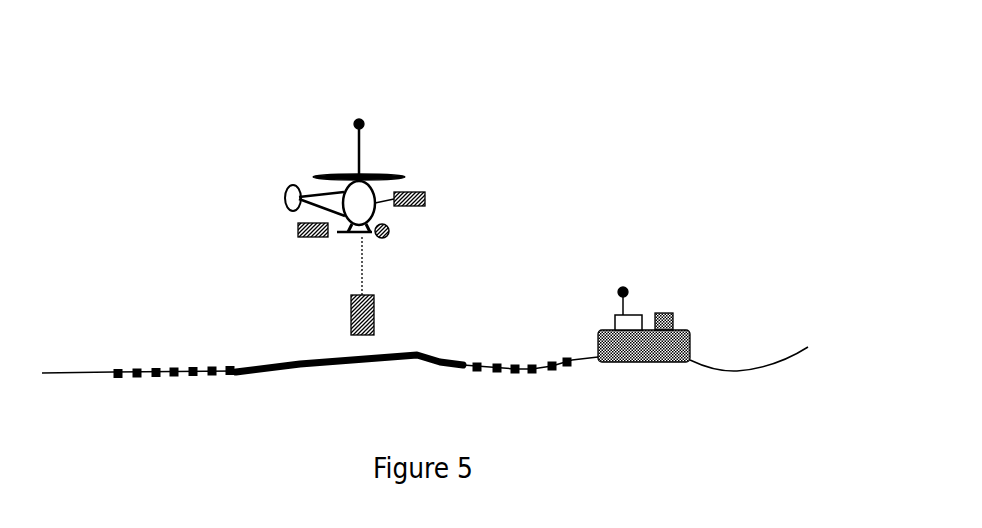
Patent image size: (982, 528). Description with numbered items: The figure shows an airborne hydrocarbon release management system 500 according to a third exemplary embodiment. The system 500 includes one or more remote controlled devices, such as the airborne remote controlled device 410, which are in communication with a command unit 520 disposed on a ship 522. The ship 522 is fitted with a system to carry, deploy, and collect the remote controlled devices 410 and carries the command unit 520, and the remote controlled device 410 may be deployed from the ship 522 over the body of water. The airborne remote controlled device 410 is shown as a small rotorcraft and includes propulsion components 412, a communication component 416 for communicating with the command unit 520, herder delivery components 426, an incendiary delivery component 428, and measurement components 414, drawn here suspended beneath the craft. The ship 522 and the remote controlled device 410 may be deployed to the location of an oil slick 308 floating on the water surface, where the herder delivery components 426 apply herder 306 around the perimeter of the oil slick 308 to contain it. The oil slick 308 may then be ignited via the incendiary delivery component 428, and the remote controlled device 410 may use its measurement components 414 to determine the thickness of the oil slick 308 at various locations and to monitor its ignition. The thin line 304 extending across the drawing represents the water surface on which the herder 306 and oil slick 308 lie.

The airborne hydrocarbon release management system 500 is at (556, 90).
The airborne remote controlled device 410 is at (328, 108).
The propulsion components 412 is at (327, 172).
The communication component 416 is at (362, 142).
The herder delivery components 426 is at (417, 195).
The incendiary delivery component 428 is at (391, 231).
The measurement components 414 is at (351, 313).
The water surface 304 is at (763, 371).
The herder 306 is at (496, 363).
The oil slick 308 is at (425, 357).
The command unit 520 is at (628, 315).
The ship 522 is at (673, 305).